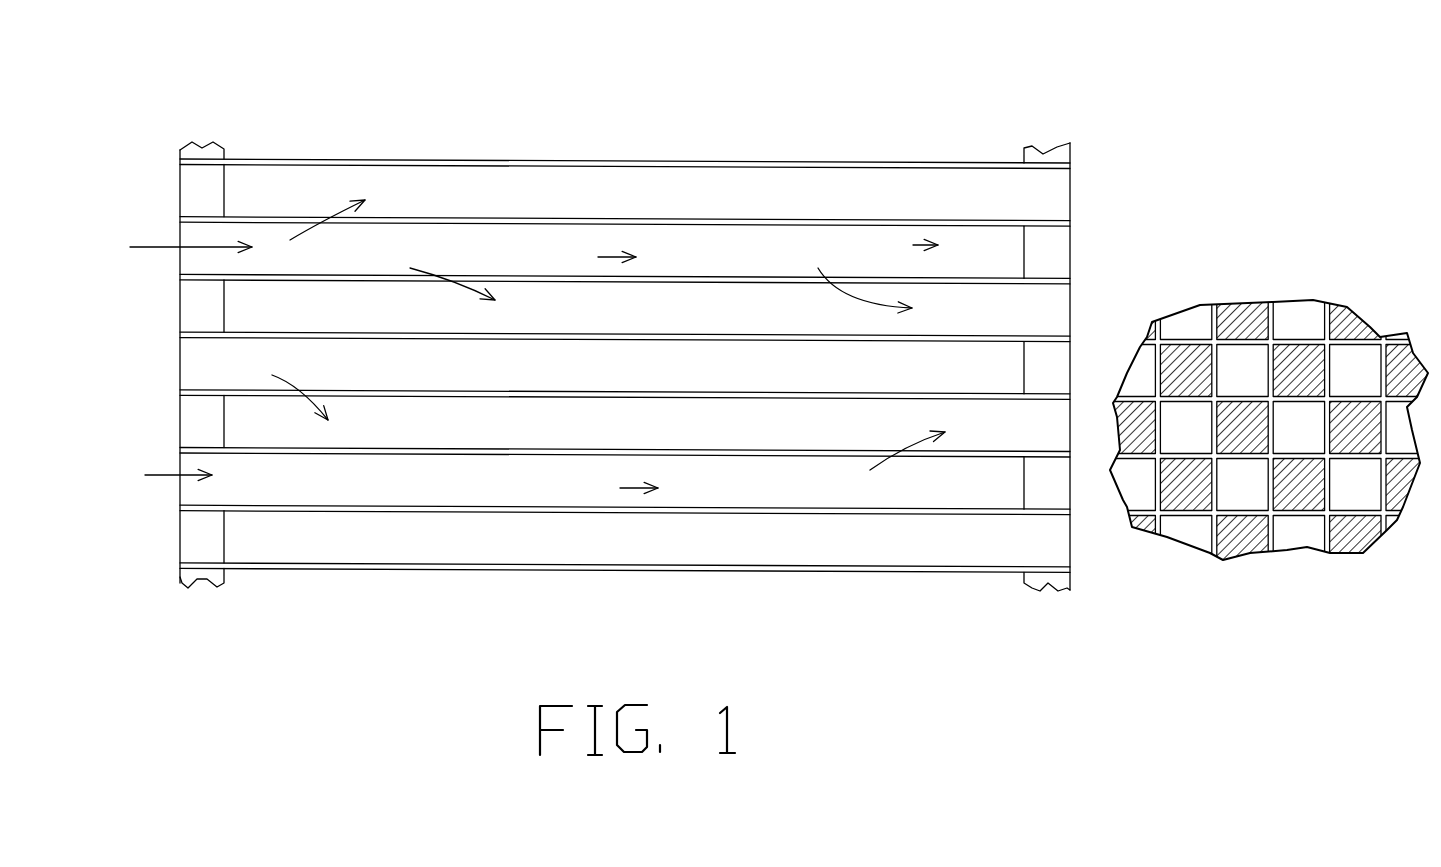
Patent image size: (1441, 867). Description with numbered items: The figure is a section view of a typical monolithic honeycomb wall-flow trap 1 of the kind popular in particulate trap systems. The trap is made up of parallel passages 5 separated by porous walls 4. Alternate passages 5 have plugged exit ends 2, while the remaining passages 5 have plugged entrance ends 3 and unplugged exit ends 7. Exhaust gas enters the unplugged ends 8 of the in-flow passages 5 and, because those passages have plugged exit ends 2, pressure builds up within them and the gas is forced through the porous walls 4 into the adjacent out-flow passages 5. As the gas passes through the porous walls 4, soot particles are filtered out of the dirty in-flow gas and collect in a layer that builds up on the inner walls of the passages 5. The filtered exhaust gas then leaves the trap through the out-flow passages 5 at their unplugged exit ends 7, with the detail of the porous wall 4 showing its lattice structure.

The monolithic honeycomb wall-flow trap 1 is at (870, 148).
The plugged exit ends 2 is at (1070, 247).
The plugged entrance ends 3 is at (213, 177).
The porous walls 4 is at (1297, 337).
The passages 5 is at (497, 240).
The unplugged exit ends 7 is at (1040, 195).
The unplugged ends 8 is at (195, 492).